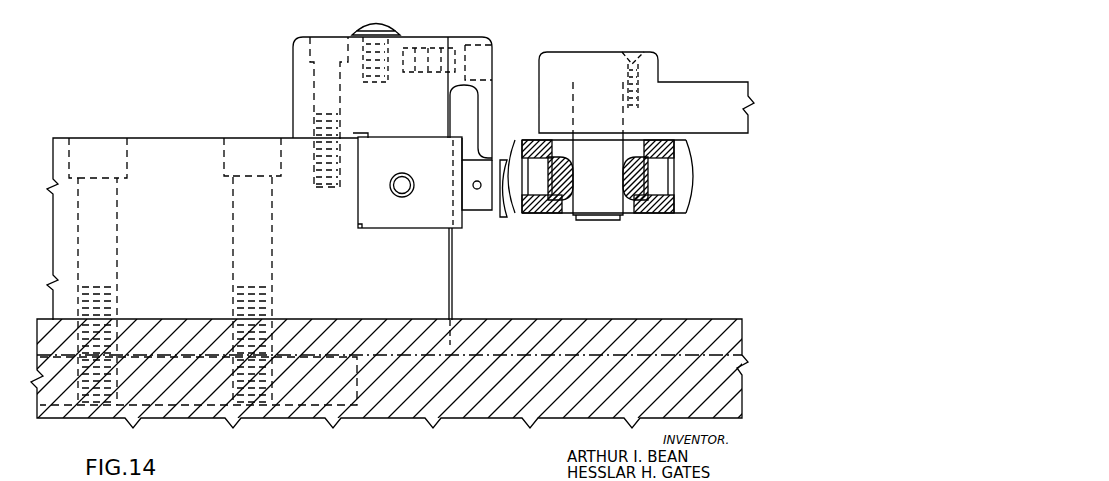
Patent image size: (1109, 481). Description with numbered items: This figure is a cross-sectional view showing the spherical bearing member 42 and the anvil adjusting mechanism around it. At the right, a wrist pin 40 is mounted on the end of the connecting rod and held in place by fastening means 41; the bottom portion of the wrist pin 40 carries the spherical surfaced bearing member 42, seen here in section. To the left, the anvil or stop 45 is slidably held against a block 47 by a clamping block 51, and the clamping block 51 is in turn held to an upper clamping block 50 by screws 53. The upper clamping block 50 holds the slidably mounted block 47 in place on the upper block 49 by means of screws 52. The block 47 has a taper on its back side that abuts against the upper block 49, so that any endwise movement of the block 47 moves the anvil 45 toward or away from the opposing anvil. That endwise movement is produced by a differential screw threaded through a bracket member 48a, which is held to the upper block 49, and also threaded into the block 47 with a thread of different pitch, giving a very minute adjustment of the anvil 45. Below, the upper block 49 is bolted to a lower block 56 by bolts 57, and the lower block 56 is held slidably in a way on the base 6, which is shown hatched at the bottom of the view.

The base 6 is at (530, 319).
The wrist pin 40 is at (578, 52).
The fastening means 41 is at (640, 52).
The spherical surfaced bearing member 42 is at (512, 216).
The anvil 45 is at (497, 209).
The block 47 is at (463, 229).
The bracket member 48a is at (397, 197).
The upper block 49 is at (195, 142).
The upper clamping block 50 is at (293, 48).
The clamping block 51 is at (470, 34).
The screws 52 is at (318, 41).
The screws 53 is at (480, 70).
The lower block 56 is at (300, 408).
The bolts 57 is at (106, 141).